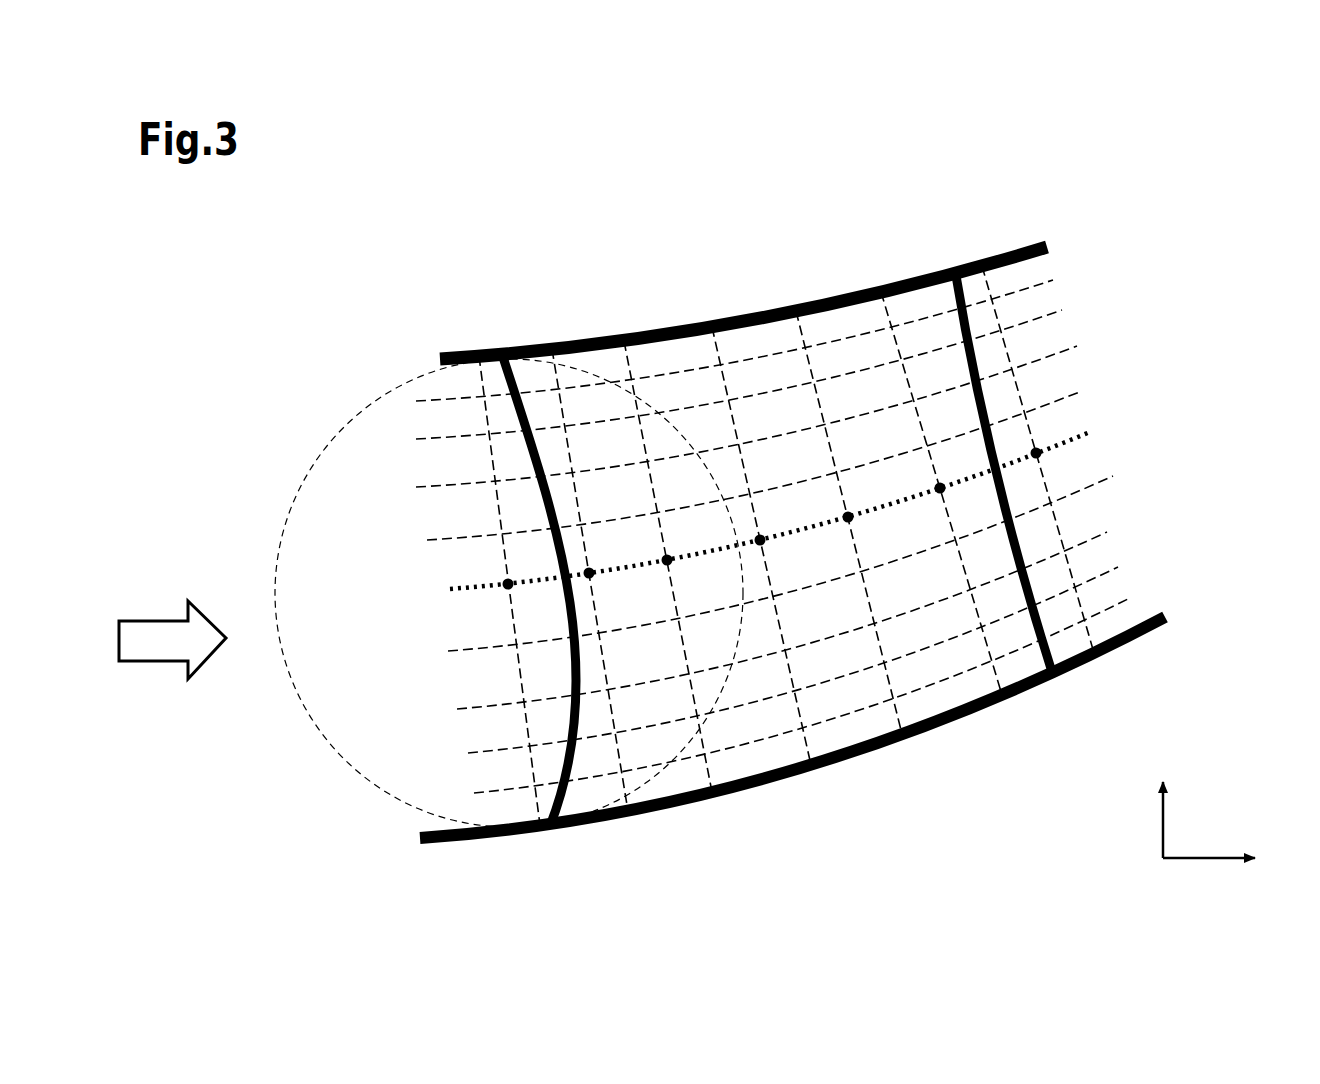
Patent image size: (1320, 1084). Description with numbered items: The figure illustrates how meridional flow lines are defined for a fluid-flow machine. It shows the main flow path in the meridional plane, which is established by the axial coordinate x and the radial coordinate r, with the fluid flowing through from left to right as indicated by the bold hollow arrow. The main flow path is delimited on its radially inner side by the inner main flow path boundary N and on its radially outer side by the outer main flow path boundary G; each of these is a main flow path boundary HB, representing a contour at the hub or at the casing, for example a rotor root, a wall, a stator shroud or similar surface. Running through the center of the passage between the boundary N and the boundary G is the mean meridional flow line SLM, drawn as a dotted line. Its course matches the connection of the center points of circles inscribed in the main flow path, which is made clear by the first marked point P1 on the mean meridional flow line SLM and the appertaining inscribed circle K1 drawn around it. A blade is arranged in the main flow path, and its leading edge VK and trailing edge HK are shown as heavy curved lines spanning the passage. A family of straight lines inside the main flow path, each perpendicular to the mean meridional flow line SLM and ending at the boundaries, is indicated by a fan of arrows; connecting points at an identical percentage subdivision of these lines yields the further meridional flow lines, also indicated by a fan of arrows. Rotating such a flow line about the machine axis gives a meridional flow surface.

The radially outer main flow path boundary G is at (985, 247).
The main flow path boundary HB is at (827, 521).
The mean meridional flow line SLM is at (714, 526).
The first marked point P1 is at (506, 571).
The circle K1 is at (509, 593).
The leading edge VK is at (548, 621).
The trailing edge HK is at (1029, 505).
The radially inner main flow path boundary N is at (814, 759).
The radial coordinate r is at (1165, 803).
The axial coordinate x is at (1223, 863).